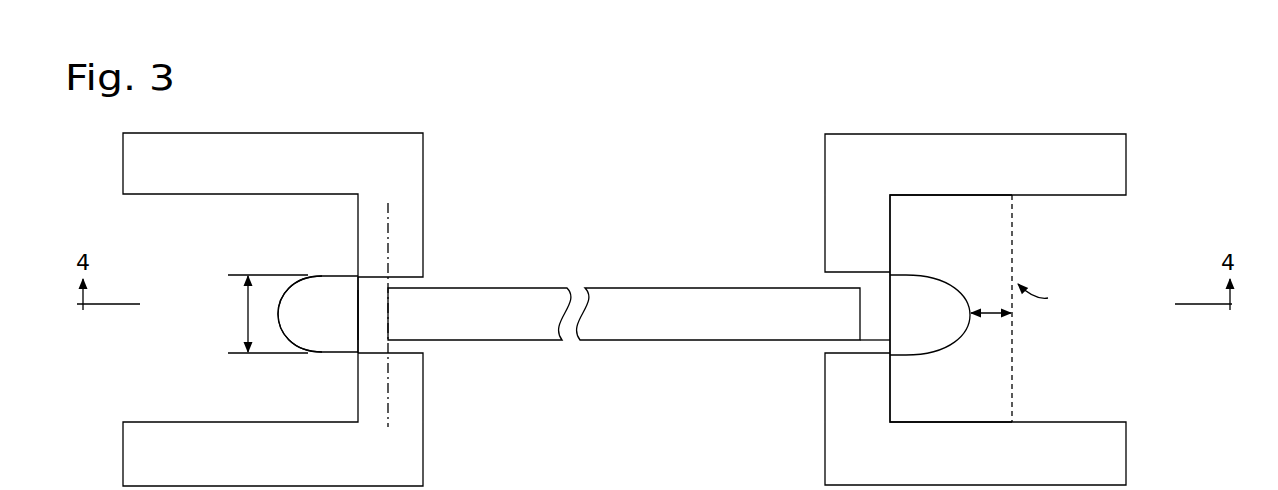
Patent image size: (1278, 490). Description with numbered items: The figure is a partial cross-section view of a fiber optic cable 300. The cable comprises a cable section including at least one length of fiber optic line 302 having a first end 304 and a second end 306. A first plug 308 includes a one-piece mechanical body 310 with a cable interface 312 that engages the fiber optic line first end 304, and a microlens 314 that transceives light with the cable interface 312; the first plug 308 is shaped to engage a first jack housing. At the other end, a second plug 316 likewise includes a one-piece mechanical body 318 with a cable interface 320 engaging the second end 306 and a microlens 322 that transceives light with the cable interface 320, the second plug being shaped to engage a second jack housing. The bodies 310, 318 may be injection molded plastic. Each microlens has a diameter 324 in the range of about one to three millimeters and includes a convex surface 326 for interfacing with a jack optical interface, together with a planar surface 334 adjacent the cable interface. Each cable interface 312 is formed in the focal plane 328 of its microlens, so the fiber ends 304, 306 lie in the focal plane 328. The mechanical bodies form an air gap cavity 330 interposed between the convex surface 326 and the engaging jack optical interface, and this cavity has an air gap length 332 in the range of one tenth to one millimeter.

The fiber optic cable 300 is at (1122, 100).
The fiber optic line 302 is at (625, 288).
The first end 304 is at (407, 325).
The second end 306 is at (796, 327).
The first plug 308 is at (385, 120).
The one-piece mechanical body 310 is at (323, 174).
The cable interface 312 is at (372, 338).
The microlens 314 is at (347, 289).
The second plug 316 is at (886, 120).
The one-piece mechanical body 318 is at (967, 179).
The cable interface 320 is at (877, 336).
The microlens 322 is at (906, 327).
The diameter 324 is at (247, 322).
The convex surface 326 is at (286, 322).
The focal plane 328 is at (388, 390).
The air gap cavity 330 is at (922, 259).
The air gap length 332 is at (990, 316).
The planar surface 334 is at (356, 310).